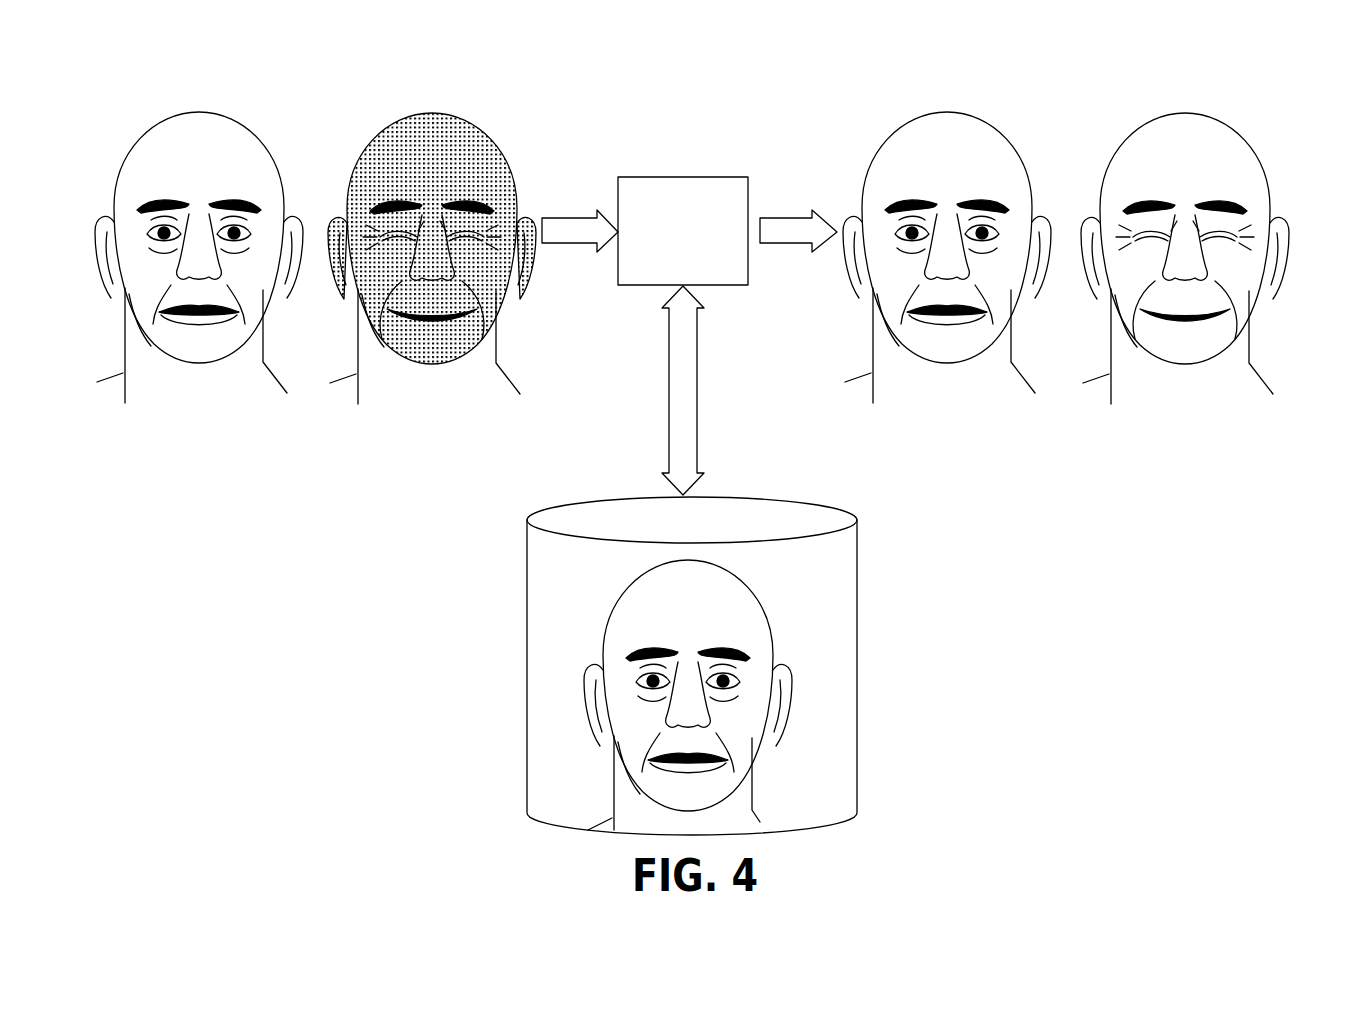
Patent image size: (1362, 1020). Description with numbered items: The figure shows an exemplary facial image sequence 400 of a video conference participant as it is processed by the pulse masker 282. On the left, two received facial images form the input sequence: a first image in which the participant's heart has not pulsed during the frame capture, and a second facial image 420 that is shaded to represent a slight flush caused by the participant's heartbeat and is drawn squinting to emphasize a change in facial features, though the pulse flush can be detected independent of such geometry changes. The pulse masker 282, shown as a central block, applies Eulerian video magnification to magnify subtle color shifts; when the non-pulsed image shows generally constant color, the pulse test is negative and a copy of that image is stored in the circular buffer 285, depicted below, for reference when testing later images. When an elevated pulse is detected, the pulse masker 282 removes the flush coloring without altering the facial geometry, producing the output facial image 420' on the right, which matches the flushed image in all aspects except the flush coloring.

The facial image sequence 400 is at (1253, 87).
The facial image 420 is at (432, 227).
The facial image 420' is at (1185, 227).
The pulse masker 282 is at (683, 177).
The circular buffer 285 is at (813, 498).